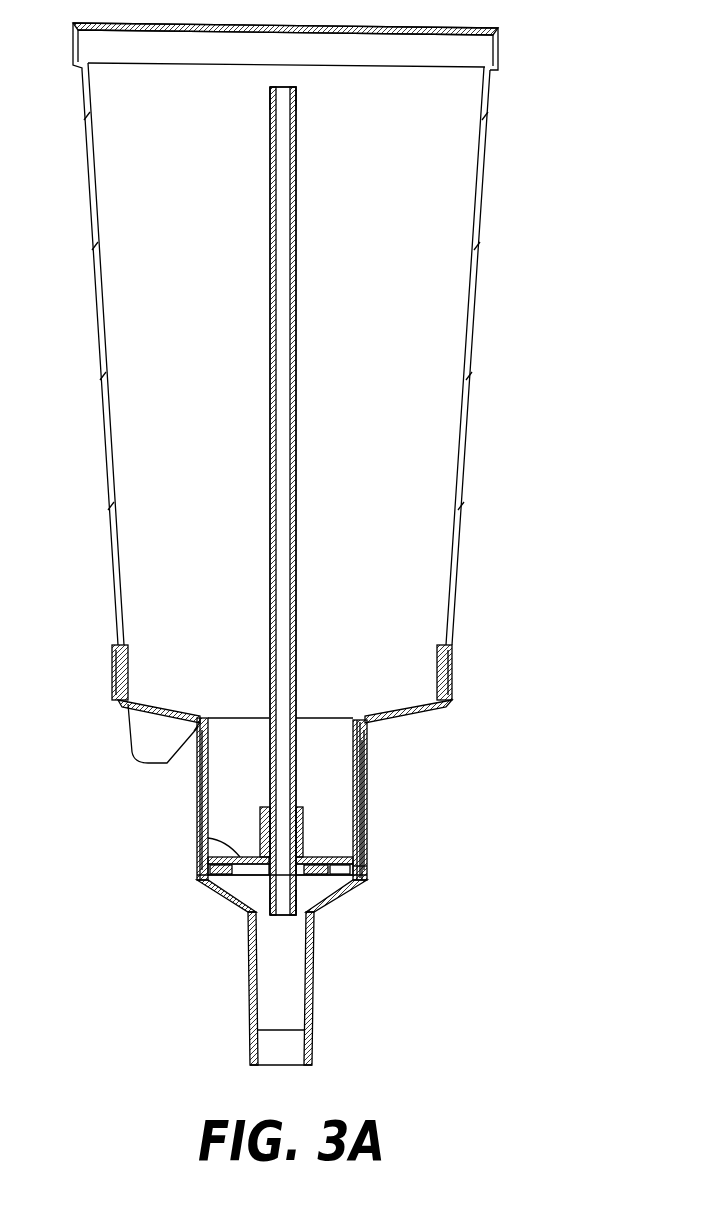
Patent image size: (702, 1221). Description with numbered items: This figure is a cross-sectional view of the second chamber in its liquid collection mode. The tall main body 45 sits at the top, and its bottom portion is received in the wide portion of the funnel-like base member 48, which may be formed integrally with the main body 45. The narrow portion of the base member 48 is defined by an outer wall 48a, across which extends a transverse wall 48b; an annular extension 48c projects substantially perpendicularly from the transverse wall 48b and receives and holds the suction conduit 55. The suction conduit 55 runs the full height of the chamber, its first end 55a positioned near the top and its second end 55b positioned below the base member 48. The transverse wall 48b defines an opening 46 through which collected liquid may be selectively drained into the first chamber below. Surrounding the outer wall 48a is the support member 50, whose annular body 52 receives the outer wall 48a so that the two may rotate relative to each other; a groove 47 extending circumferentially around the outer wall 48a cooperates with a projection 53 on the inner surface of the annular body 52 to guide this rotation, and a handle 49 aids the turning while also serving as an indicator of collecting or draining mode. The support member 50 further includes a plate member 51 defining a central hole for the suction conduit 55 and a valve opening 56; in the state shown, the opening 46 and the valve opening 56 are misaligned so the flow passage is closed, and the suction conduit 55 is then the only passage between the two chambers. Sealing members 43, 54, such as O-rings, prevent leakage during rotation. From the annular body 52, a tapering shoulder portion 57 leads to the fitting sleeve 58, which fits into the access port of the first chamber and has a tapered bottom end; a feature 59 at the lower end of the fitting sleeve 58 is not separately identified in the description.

The sealing member 43 is at (197, 857).
The main body 45 is at (480, 212).
The opening 46 is at (197, 835).
The groove 47 is at (197, 790).
The base member 48 is at (433, 708).
The outer wall 48a is at (368, 748).
The transverse wall 48b is at (368, 862).
The annular extension 48c is at (303, 818).
The handle 49 is at (145, 740).
The support member 50 is at (297, 900).
The plate member 51 is at (197, 873).
The annular body 52 is at (368, 765).
The projection 53 is at (197, 805).
The sealing member 54 is at (370, 870).
The suction conduit 55 is at (285, 372).
The first end 55a is at (292, 90).
The second end 55b is at (258, 925).
The valve opening 56 is at (328, 870).
The shoulder portion 57 is at (213, 895).
The fitting sleeve 58 is at (316, 980).
The outlet 59 is at (300, 1057).